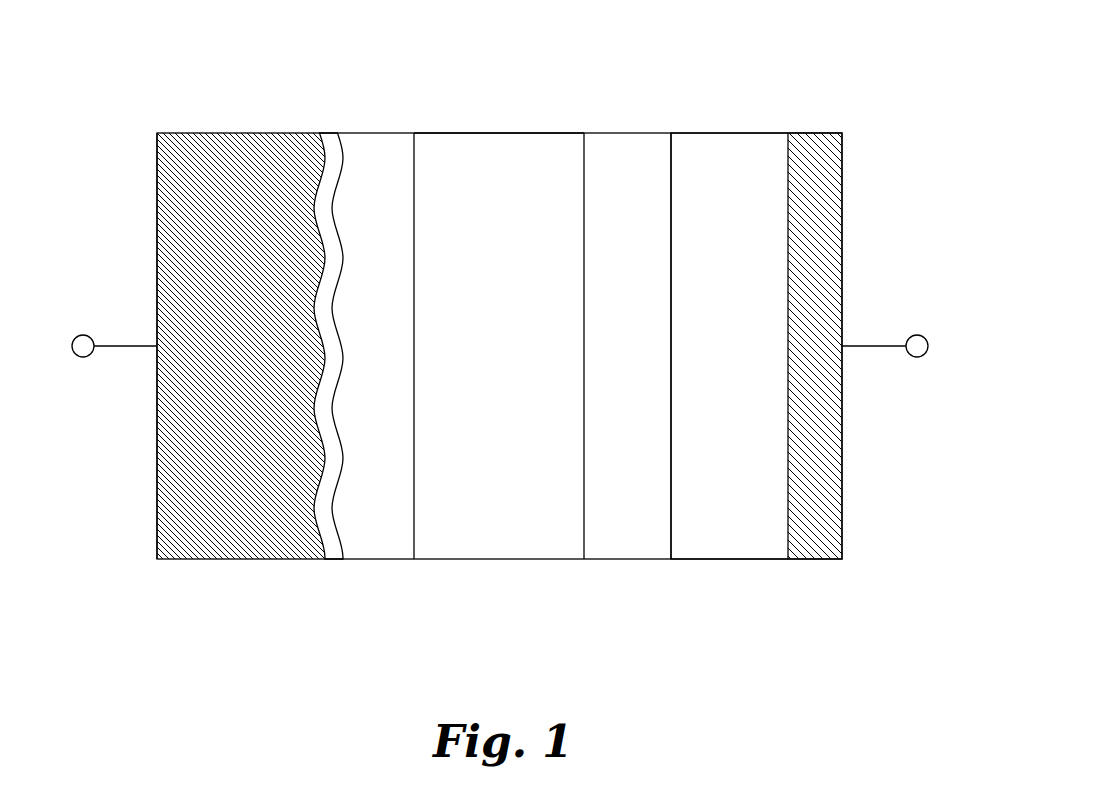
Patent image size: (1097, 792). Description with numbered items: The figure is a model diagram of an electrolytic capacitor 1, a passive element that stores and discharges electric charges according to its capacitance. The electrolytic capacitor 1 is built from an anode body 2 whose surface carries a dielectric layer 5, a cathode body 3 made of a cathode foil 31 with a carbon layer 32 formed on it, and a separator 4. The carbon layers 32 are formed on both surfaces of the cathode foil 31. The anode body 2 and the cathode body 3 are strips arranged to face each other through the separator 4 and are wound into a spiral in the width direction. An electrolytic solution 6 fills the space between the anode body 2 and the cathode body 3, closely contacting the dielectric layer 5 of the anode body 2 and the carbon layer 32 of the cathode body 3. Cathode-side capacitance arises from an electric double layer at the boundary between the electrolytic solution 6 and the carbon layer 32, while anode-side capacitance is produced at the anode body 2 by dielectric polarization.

The electrolytic capacitor 1 is at (479, 600).
The anode body 2 is at (240, 133).
The cathode body 3 is at (783, 290).
The cathode foil 31 is at (818, 133).
The carbon layer 32 is at (693, 133).
The separator 4 is at (490, 133).
The dielectric layer 5 is at (325, 133).
The electrolytic solution 6 is at (395, 133).